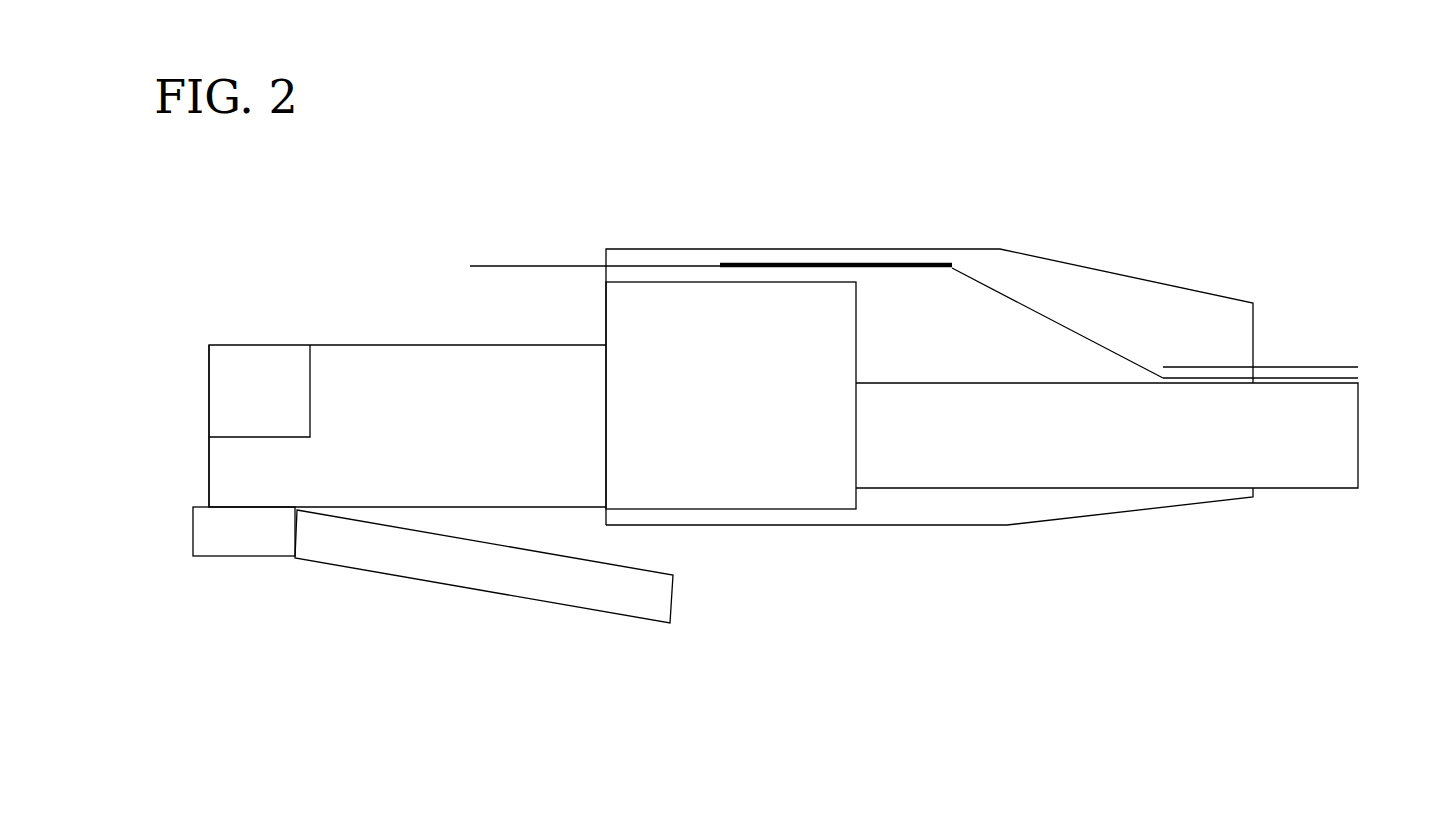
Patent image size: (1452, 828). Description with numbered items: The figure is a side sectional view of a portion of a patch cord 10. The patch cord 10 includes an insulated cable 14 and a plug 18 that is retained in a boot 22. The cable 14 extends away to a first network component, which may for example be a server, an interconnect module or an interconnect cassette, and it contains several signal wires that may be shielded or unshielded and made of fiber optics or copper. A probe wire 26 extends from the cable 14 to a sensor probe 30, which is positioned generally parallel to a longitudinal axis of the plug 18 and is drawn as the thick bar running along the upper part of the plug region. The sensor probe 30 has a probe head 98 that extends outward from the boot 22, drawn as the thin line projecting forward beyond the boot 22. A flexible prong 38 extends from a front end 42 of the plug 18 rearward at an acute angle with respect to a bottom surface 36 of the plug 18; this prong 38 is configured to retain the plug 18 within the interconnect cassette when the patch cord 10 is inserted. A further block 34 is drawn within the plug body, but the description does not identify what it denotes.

The patch cord 10 is at (890, 219).
The insulated cable 14 is at (1358, 435).
The plug 18 is at (341, 343).
The boot 22 is at (1143, 278).
The probe wire 26 is at (1113, 350).
The sensor probe 30 is at (812, 263).
The load bar 34 is at (647, 280).
The bottom surface 36 is at (533, 510).
The flexible prong 38 is at (402, 578).
The front end 42 is at (208, 468).
The probe head 98 is at (503, 265).